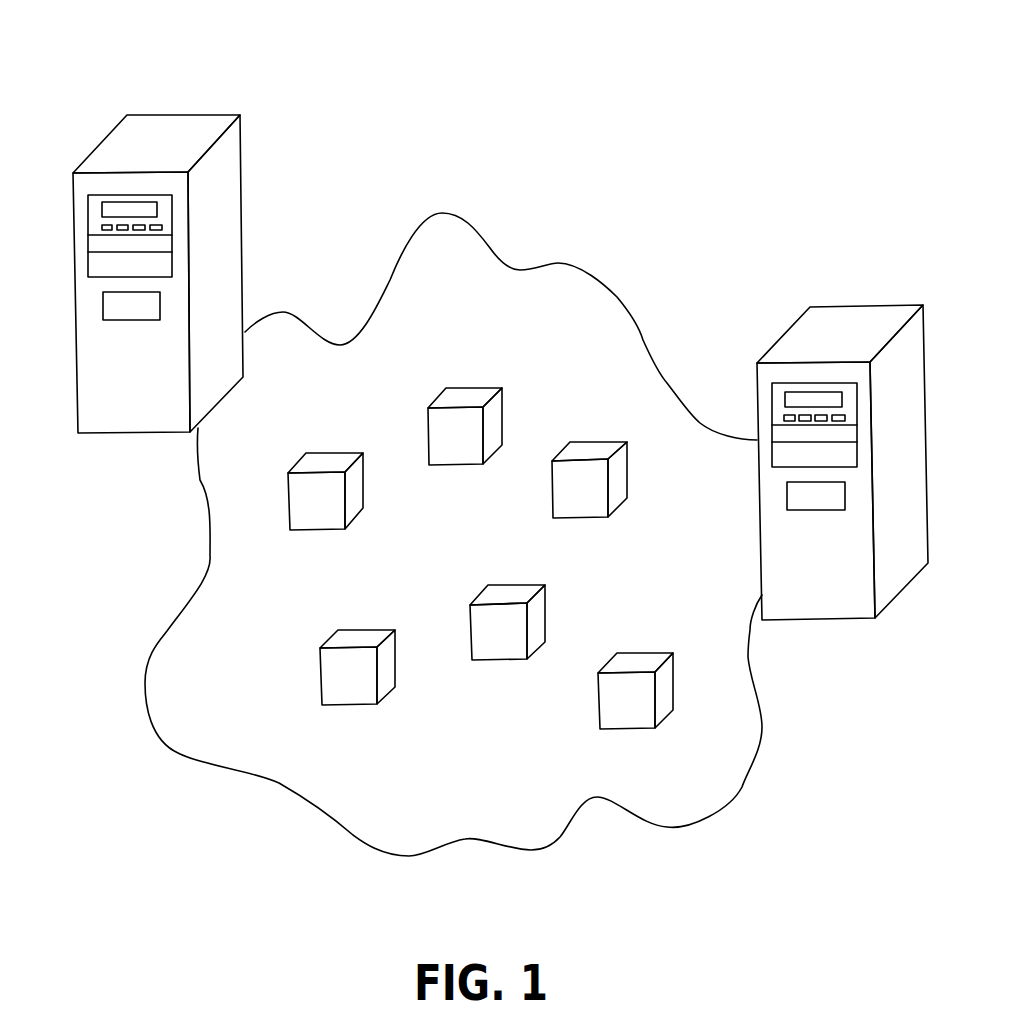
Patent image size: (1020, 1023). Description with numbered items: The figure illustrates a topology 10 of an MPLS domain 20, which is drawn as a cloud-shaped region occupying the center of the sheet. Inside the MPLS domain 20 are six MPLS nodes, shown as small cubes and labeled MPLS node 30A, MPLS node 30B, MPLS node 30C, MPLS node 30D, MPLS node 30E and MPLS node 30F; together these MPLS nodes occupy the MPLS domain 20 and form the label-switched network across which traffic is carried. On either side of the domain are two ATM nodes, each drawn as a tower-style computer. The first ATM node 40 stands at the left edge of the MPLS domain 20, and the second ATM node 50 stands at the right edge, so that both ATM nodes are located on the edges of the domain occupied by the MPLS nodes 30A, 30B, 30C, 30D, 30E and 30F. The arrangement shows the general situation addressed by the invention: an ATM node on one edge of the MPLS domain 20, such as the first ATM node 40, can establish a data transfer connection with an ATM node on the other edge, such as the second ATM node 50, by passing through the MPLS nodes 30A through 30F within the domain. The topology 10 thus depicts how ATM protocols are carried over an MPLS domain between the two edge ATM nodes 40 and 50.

The topology 10 is at (566, 106).
The MPLS domain 20 is at (321, 781).
The MPLS node 30A is at (322, 450).
The MPLS node 30B is at (467, 392).
The MPLS node 30C is at (588, 447).
The MPLS node 30D is at (510, 590).
The MPLS node 30E is at (355, 635).
The MPLS node 30F is at (633, 657).
The first ATM node 40 is at (160, 130).
The second ATM node 50 is at (820, 328).